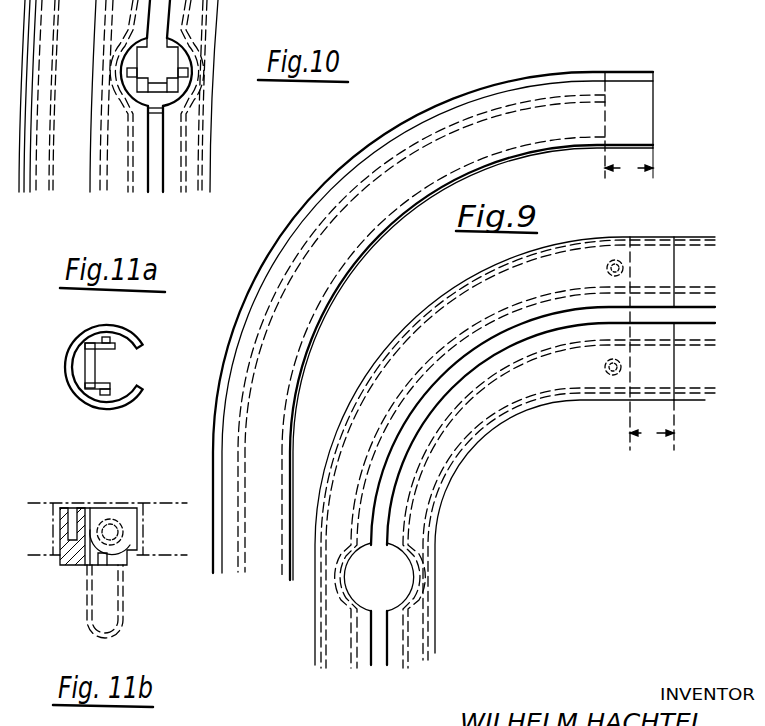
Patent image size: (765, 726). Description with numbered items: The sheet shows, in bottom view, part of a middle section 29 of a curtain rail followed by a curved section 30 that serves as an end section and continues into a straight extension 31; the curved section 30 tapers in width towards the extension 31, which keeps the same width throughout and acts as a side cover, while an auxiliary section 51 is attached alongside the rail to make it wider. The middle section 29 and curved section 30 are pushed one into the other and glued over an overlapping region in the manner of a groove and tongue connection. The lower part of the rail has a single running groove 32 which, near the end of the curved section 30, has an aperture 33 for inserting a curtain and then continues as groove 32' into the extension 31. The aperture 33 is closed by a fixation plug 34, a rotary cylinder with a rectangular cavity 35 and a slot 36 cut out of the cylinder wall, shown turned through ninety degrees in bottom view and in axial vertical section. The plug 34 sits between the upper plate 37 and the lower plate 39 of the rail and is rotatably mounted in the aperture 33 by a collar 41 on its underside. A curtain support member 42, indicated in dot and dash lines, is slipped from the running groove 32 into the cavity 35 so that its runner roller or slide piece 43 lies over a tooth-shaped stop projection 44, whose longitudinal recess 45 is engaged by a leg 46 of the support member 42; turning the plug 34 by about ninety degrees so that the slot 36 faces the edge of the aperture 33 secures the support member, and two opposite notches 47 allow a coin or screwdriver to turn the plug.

In FIG. 9, the middle section 29 is at (695, 393).
In FIG. 9, the curved section 30 is at (490, 464).
In FIG. 9, the straight extension 31 is at (420, 623).
In FIG. 10, the straight extension 31 is at (190, 163).
In FIG. 9, the running groove 32 is at (543, 426).
In FIG. 9, the continuation of running groove 32' is at (331, 638).
In FIG. 10, the continuation of running groove 32' is at (206, 145).
In FIG. 9, the aperture 33 is at (397, 568).
In FIG. 10, the fixation plug 34 is at (185, 62).
In FIG. 11a, the fixation plug 34 is at (72, 355).
In FIG. 11a, the rectangular cavity 35 is at (113, 362).
In FIG. 10, the slot 36 is at (158, 47).
In FIG. 11a, the slot 36 is at (137, 347).
In FIG. 11b, the slot 36 is at (176, 530).
In FIG. 11b, the plate 37 is at (145, 503).
In FIG. 11b, the plate 39 is at (42, 565).
In FIG. 11b, the collar 41 is at (127, 563).
In FIG. 11b, the curtain support member 42 is at (112, 630).
In FIG. 11b, the runner roller or slide piece 43 is at (115, 517).
In FIG. 11a, the stop projection 44 is at (90, 345).
In FIG. 11b, the stop projection 44 is at (88, 557).
In FIG. 11a, the groove or recess 45 is at (87, 368).
In FIG. 11b, the leg 46 is at (85, 592).
In FIG. 11a, the notches 47 is at (108, 337).
In FIG. 9, the auxiliary section 51 is at (405, 197).